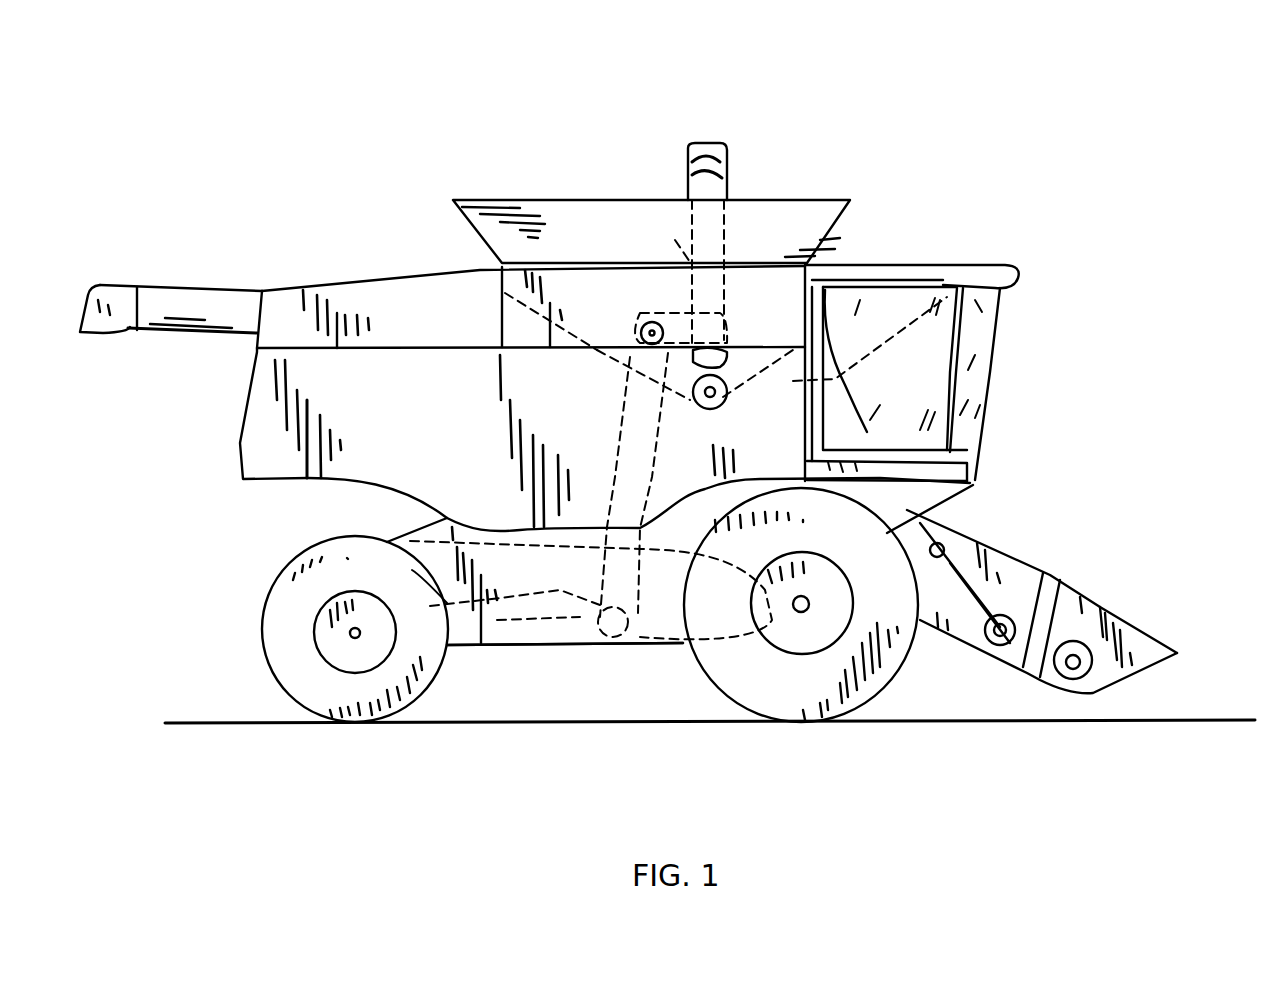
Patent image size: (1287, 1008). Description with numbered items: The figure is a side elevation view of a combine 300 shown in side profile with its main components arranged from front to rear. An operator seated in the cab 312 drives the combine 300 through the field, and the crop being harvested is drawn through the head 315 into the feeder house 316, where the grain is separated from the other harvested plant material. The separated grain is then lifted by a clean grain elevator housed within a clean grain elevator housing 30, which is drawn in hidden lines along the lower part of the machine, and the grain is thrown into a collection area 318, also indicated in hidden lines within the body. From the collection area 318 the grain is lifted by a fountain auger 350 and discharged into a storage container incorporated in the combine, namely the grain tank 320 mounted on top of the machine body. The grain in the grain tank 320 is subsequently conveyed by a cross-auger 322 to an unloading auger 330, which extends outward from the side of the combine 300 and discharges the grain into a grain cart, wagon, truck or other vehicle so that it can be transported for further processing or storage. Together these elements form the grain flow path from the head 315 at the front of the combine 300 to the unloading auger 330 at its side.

The combine 300 is at (1005, 165).
The cab 312 is at (987, 393).
The head 315 is at (1110, 597).
The feeder house 316 is at (645, 678).
The collection area 318 is at (735, 365).
The grain tank 320 is at (490, 200).
The cross-auger 322 is at (950, 262).
The unloading auger 330 is at (148, 280).
The fountain auger 350 is at (675, 240).
The clean grain elevator housing 30 is at (503, 627).